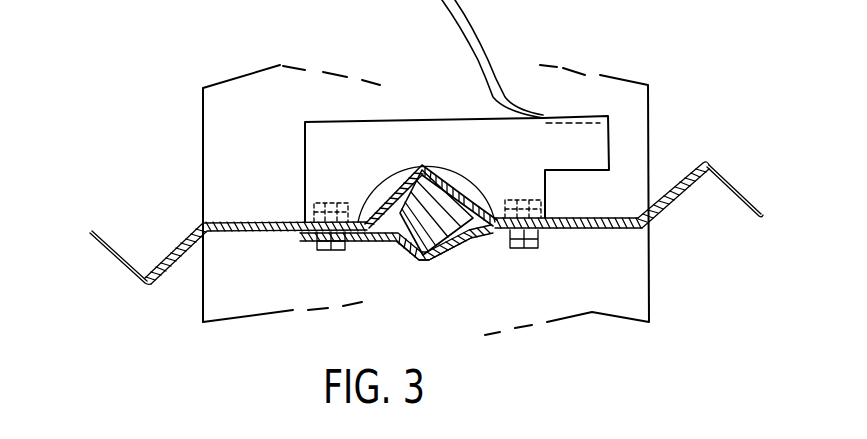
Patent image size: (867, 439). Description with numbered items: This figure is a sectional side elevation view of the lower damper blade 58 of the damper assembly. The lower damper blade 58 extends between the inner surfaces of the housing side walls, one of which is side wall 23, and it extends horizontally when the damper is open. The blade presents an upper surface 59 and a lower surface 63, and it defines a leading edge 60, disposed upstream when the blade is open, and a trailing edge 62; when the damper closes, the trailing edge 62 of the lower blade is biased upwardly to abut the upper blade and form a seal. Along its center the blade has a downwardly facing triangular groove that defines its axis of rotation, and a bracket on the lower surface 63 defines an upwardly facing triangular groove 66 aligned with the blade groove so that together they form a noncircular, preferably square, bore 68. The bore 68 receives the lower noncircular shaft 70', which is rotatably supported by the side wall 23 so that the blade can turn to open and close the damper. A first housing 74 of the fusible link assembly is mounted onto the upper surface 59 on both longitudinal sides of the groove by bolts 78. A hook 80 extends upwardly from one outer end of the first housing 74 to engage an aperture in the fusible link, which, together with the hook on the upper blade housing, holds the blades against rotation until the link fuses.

The side wall 23 is at (240, 152).
The first housing 74 is at (328, 172).
The hook 80 is at (465, 17).
The trailing edge 62 is at (417, 218).
The lower noncircular shaft 70' is at (435, 191).
The triangular groove 66 is at (430, 258).
The upper surface 59 is at (592, 219).
The lower surface 63 is at (615, 231).
The lower damper blade 58 is at (578, 232).
The leading edge 60 is at (761, 214).
The bore 68 is at (404, 252).
The bolt 78 is at (327, 253).